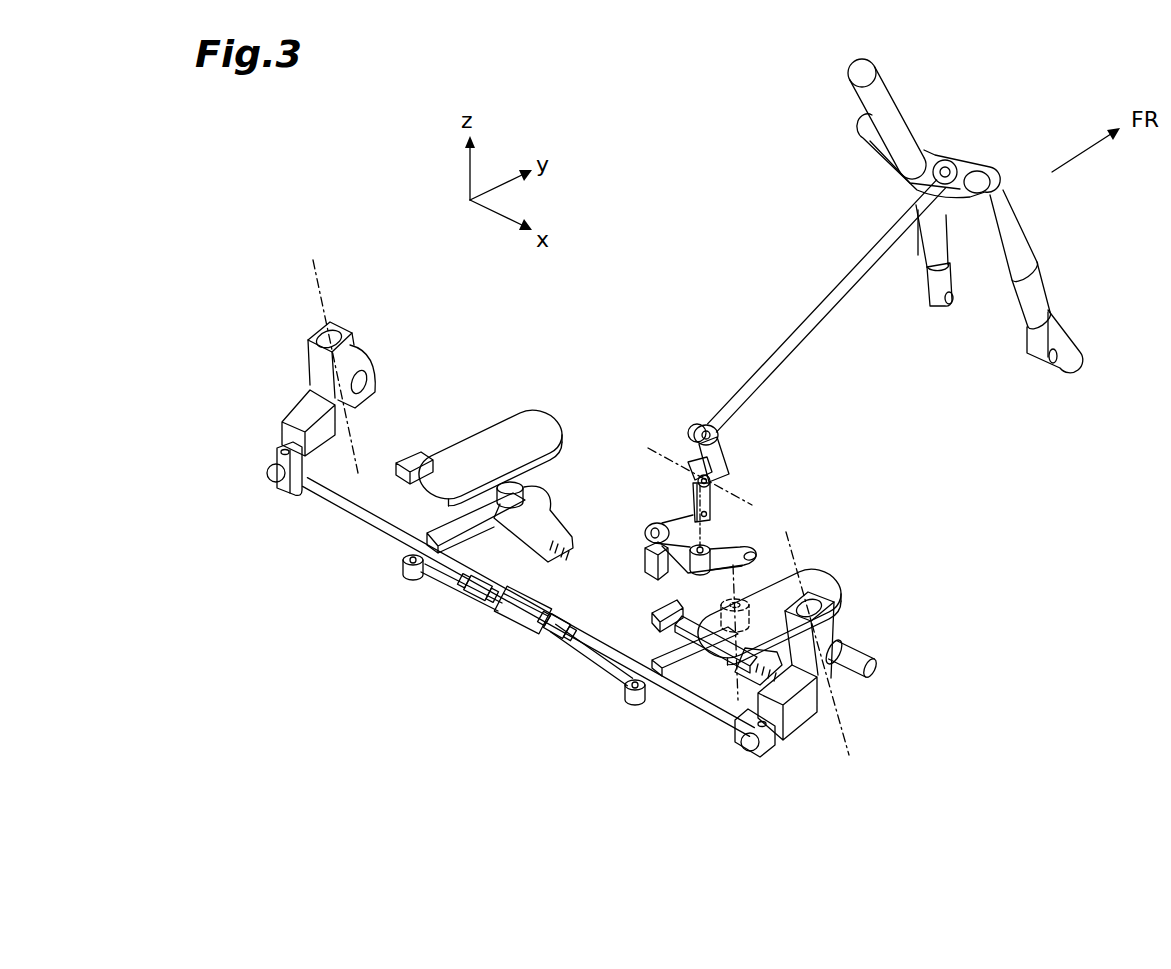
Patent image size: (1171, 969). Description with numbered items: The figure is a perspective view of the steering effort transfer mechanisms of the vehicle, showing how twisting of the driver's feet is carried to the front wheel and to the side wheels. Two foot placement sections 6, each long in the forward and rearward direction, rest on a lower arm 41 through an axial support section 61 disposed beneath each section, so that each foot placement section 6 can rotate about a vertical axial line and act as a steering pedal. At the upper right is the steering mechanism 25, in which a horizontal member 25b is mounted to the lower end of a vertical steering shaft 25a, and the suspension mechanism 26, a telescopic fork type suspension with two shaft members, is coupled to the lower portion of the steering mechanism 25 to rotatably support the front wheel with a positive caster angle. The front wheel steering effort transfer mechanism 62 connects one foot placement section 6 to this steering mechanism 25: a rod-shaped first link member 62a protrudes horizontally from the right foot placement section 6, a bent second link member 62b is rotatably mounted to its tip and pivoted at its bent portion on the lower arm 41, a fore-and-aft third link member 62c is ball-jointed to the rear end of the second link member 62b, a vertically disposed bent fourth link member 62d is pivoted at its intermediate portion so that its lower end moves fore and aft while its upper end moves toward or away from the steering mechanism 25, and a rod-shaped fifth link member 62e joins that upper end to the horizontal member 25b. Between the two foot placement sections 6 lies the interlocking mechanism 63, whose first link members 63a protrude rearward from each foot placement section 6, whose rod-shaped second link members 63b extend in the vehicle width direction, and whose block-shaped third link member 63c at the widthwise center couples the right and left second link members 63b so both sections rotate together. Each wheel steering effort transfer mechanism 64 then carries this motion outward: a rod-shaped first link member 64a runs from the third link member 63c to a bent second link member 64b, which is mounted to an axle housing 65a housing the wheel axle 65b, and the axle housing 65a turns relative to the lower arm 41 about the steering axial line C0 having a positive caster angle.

The foot placement section 6 is at (490, 445).
The steering mechanism 25 is at (944, 126).
The steering shaft 25a is at (882, 125).
The horizontal member 25b is at (956, 160).
The suspension mechanism 26 is at (930, 243).
The lower arm 41 is at (548, 531).
The axial support section 61 is at (527, 484).
The front wheel steering effort transfer mechanism 62 is at (816, 380).
The first link member 62a is at (762, 566).
The second link member 62b is at (733, 550).
The third link member 62c is at (707, 520).
The fourth link member 62d is at (722, 447).
The fifth link member 62e is at (753, 383).
The interlocking mechanism 63 is at (483, 658).
The first link member 63a is at (410, 548).
The second link member 63b is at (447, 587).
The third link member 63c is at (490, 642).
The wheel steering effort transfer mechanism 64 is at (499, 639).
The first link member 64a is at (337, 503).
The second link member 64b is at (283, 427).
The axle housing 65a is at (313, 378).
The axle 65b is at (300, 353).
The steering axial line C0 is at (318, 275).